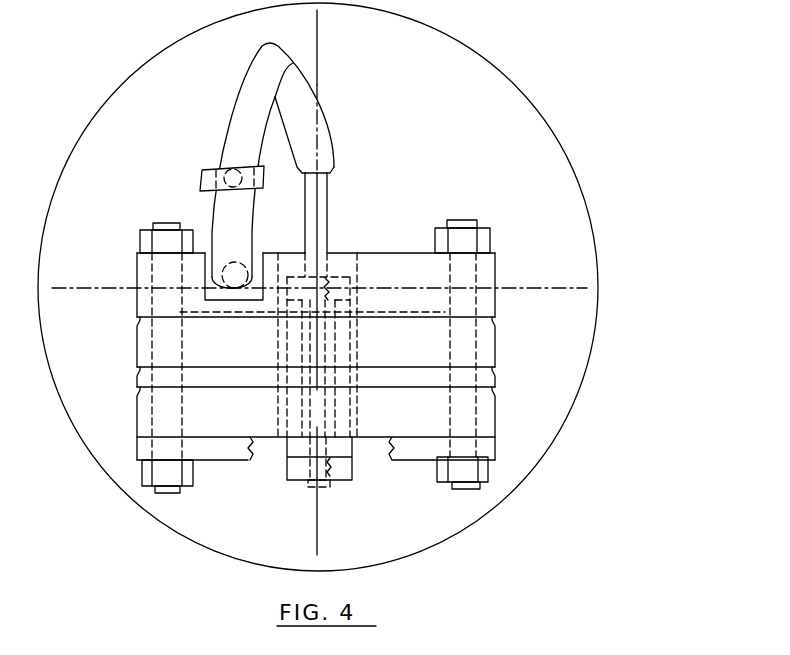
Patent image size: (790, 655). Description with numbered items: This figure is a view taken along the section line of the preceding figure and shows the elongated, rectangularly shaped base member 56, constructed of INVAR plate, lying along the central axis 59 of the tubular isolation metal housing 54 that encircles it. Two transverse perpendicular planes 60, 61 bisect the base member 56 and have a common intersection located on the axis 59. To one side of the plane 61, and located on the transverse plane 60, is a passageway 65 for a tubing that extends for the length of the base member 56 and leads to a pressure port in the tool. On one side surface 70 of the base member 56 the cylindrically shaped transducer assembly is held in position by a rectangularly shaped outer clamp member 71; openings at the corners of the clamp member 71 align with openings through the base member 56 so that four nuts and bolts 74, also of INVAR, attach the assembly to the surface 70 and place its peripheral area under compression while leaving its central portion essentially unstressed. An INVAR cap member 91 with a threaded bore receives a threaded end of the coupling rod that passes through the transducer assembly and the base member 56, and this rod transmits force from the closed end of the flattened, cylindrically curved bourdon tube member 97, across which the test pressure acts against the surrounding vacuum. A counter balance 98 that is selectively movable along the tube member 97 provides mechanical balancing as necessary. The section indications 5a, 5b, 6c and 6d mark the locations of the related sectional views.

The tubular isolation metal housing 54 is at (523, 93).
The base member 56 is at (397, 253).
The central axis 59 is at (323, 283).
The transverse plane 60 is at (542, 283).
The transverse plane 61 is at (317, 35).
The passageway 65 is at (220, 283).
The side surface 70 is at (460, 316).
The outer clamp member 71 is at (495, 443).
The nuts and bolts 74 is at (478, 223).
The cap member 91 is at (287, 483).
The bourdon tube member 97 is at (298, 107).
The counter balance 98 is at (203, 180).
The section line 5a is at (61, 387).
The section line 5b is at (73, 387).
The section line 6c is at (125, 317).
The section line 6d is at (125, 367).